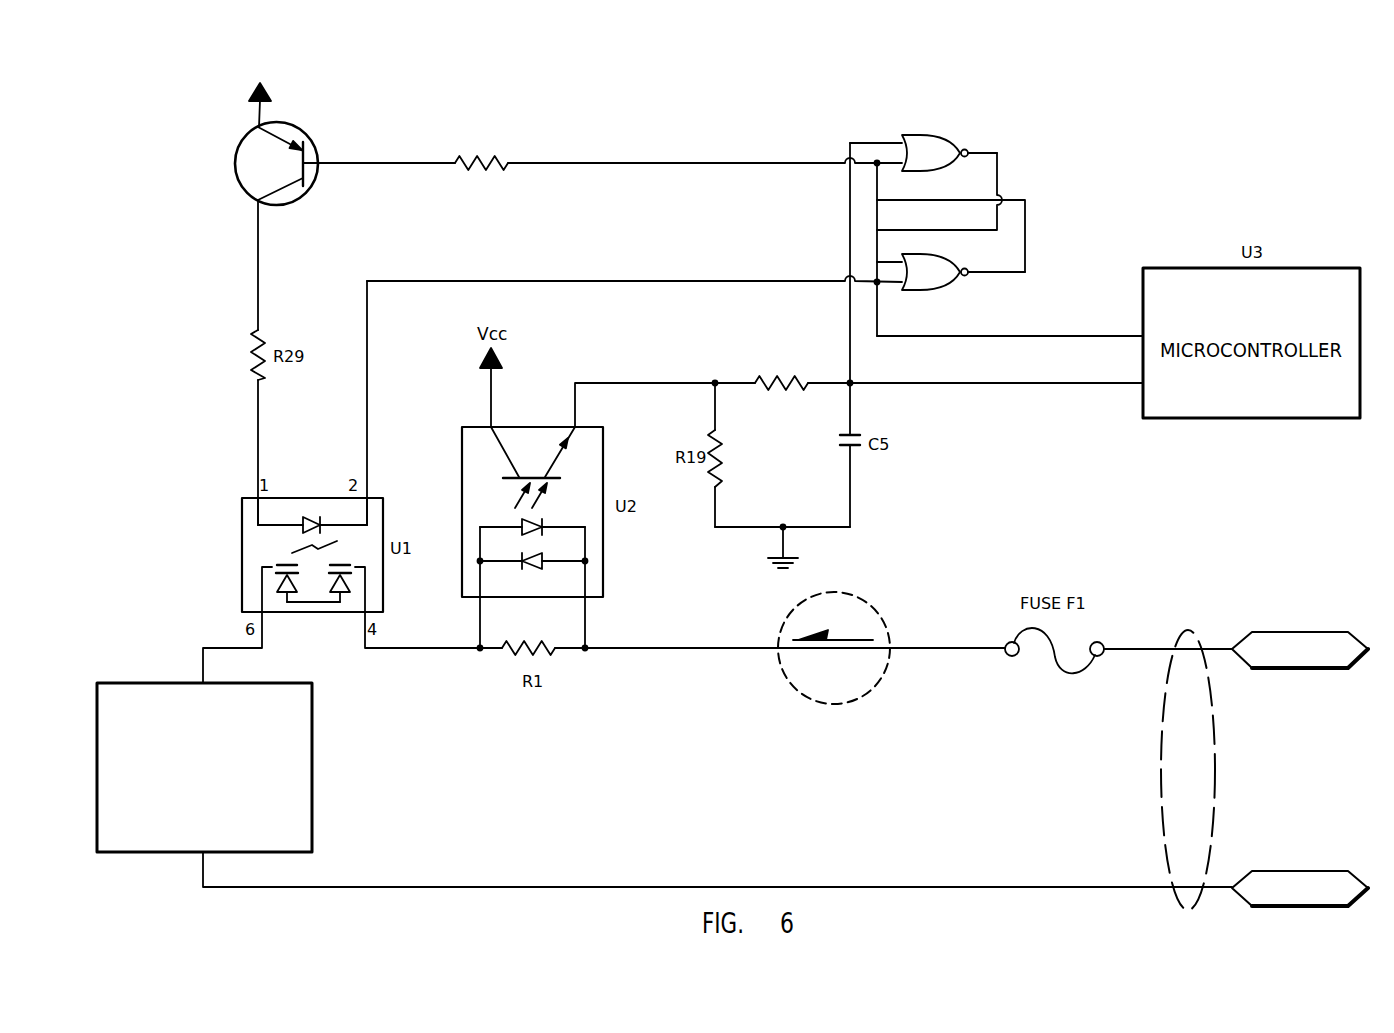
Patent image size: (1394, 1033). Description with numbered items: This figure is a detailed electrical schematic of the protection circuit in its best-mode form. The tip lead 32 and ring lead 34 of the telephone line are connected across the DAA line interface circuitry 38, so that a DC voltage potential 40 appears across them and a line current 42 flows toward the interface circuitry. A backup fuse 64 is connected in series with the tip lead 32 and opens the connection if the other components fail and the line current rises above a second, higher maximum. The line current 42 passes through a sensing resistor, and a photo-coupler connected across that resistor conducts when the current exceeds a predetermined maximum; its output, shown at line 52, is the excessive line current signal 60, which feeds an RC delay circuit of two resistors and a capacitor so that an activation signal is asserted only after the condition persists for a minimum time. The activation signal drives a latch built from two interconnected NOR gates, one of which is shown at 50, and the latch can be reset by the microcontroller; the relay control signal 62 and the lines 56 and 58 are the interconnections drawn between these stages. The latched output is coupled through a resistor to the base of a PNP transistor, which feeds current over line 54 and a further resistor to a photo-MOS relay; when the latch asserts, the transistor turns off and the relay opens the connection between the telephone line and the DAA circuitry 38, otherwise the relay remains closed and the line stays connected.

The tip lead 32 is at (1338, 643).
The ring lead 34 is at (1338, 882).
The DAA line interface circuitry 38 is at (292, 726).
The DC voltage potential VIN 40 is at (1162, 797).
The current IIN 42 is at (875, 608).
The NOR gate 50 is at (939, 165).
The line 52 is at (939, 284).
The schematic line 54 is at (297, 127).
The signal line 56 is at (630, 281).
The signal line 58 is at (640, 383).
The excessive line current signal 60 is at (945, 383).
The relay control signal 62 is at (1105, 335).
The fuse 64 is at (683, 163).